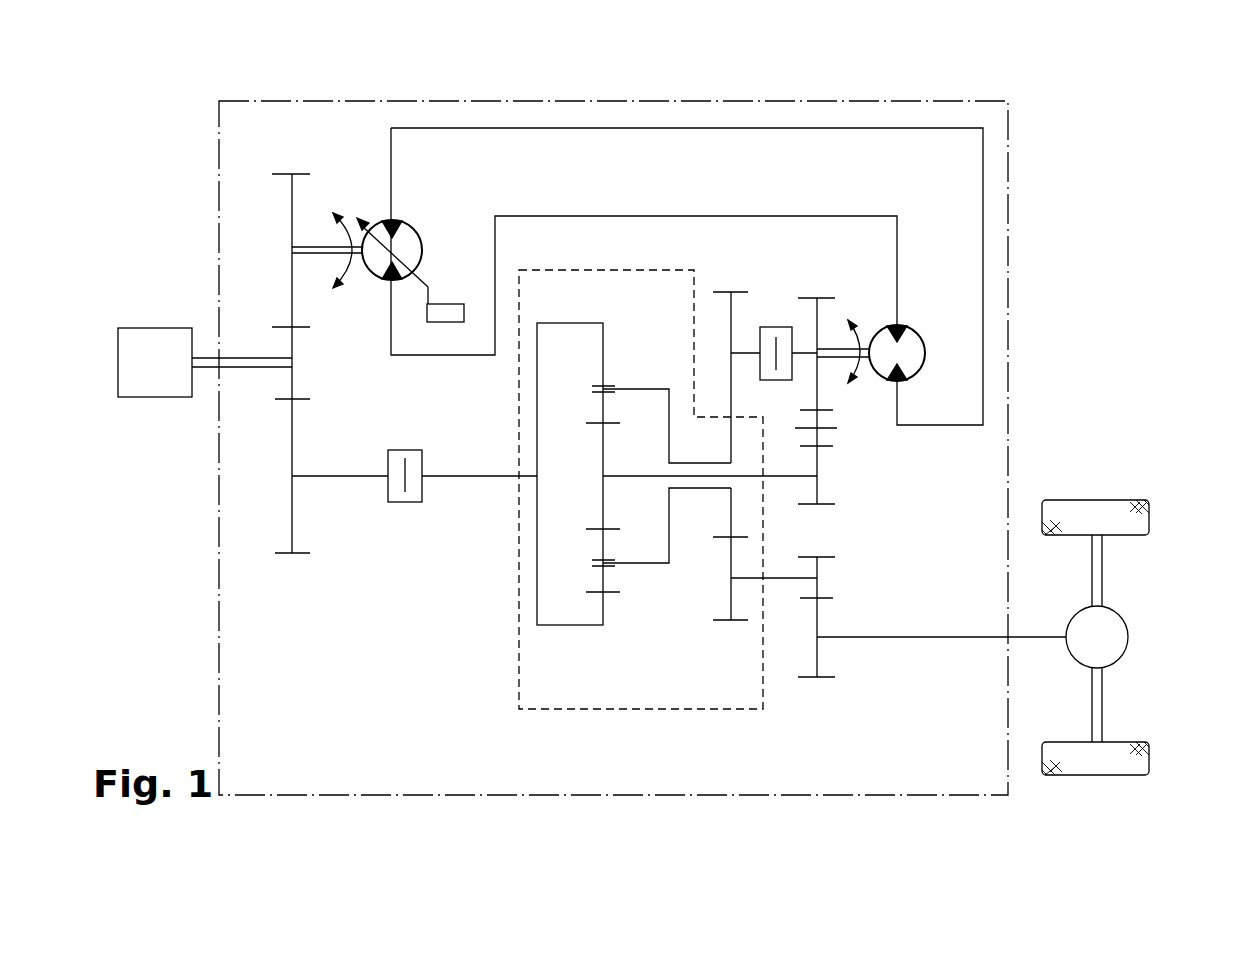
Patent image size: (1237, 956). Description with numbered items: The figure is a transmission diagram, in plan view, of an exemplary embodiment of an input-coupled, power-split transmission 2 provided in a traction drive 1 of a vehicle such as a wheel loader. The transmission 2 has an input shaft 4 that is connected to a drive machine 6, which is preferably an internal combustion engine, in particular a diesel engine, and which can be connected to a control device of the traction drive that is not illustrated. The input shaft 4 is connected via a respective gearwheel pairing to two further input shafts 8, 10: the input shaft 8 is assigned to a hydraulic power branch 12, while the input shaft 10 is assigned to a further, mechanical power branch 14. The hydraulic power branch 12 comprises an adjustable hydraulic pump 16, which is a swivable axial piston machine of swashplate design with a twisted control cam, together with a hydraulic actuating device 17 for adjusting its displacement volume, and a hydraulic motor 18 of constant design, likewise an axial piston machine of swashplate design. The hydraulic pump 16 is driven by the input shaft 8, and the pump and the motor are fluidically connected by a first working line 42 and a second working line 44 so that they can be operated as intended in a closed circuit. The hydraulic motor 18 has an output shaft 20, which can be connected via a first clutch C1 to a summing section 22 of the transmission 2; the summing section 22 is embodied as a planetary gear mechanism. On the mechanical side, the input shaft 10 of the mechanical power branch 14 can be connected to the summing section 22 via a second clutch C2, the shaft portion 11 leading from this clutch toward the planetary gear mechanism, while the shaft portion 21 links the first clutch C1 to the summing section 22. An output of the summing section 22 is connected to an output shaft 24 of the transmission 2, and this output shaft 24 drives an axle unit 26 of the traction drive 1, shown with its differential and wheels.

The traction drive 1 is at (1123, 106).
The power-split transmission 2 is at (1008, 197).
The input shaft 4 is at (253, 358).
The drive machine 6 is at (138, 338).
The input shaft 8 is at (292, 250).
The input shaft 10 is at (348, 478).
The shaft section to planetary gear 11 is at (466, 478).
The hydraulic power branch 12 is at (352, 170).
The mechanical power branch 14 is at (255, 466).
The hydraulic pump 16 is at (410, 240).
The hydraulic actuating device 17 is at (444, 312).
The hydraulic motor 18 is at (910, 360).
The output shaft 20 is at (827, 347).
The shaft to clutch C1 21 is at (733, 355).
The summing section 22 is at (622, 709).
The output shaft 24 is at (900, 640).
The axle unit 26 is at (1138, 598).
The first working line 42 is at (637, 128).
The second working line 44 is at (707, 216).
The first clutch C1 is at (773, 327).
The second clutch C2 is at (406, 503).